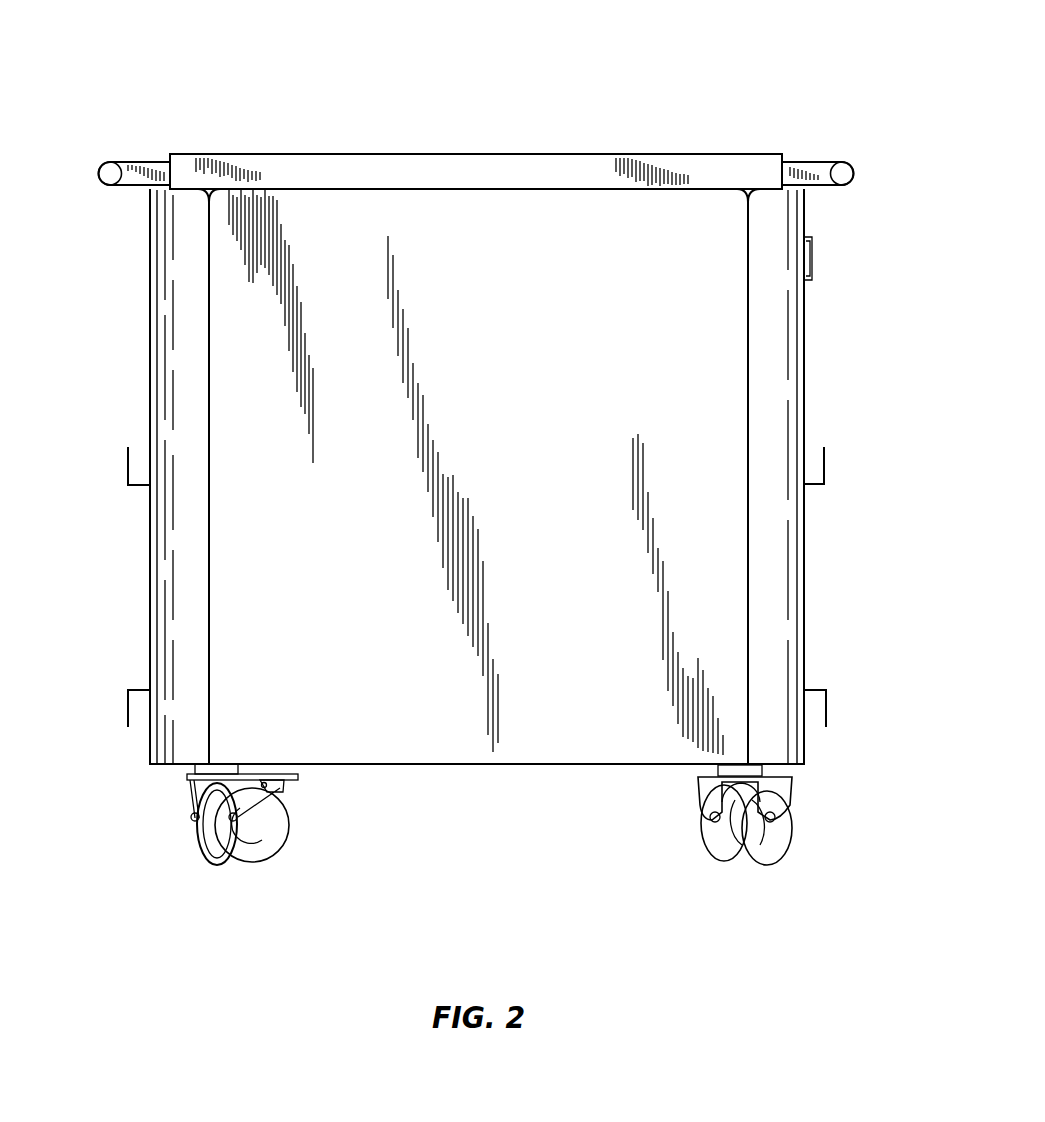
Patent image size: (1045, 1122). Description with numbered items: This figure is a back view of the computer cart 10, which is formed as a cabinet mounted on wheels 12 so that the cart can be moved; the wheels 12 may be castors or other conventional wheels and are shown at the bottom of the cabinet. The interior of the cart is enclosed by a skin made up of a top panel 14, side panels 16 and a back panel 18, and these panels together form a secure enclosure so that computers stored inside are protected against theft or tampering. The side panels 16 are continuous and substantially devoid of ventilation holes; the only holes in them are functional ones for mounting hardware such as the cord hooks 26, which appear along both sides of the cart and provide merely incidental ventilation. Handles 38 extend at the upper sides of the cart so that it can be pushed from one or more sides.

The computer cart 10 is at (534, 88).
The wheels 12 is at (267, 815).
The top panel 14 is at (345, 153).
The side panels 16 is at (150, 326).
The back panel 18 is at (378, 725).
The cord hooks 26 is at (128, 463).
The handles 38 is at (110, 172).